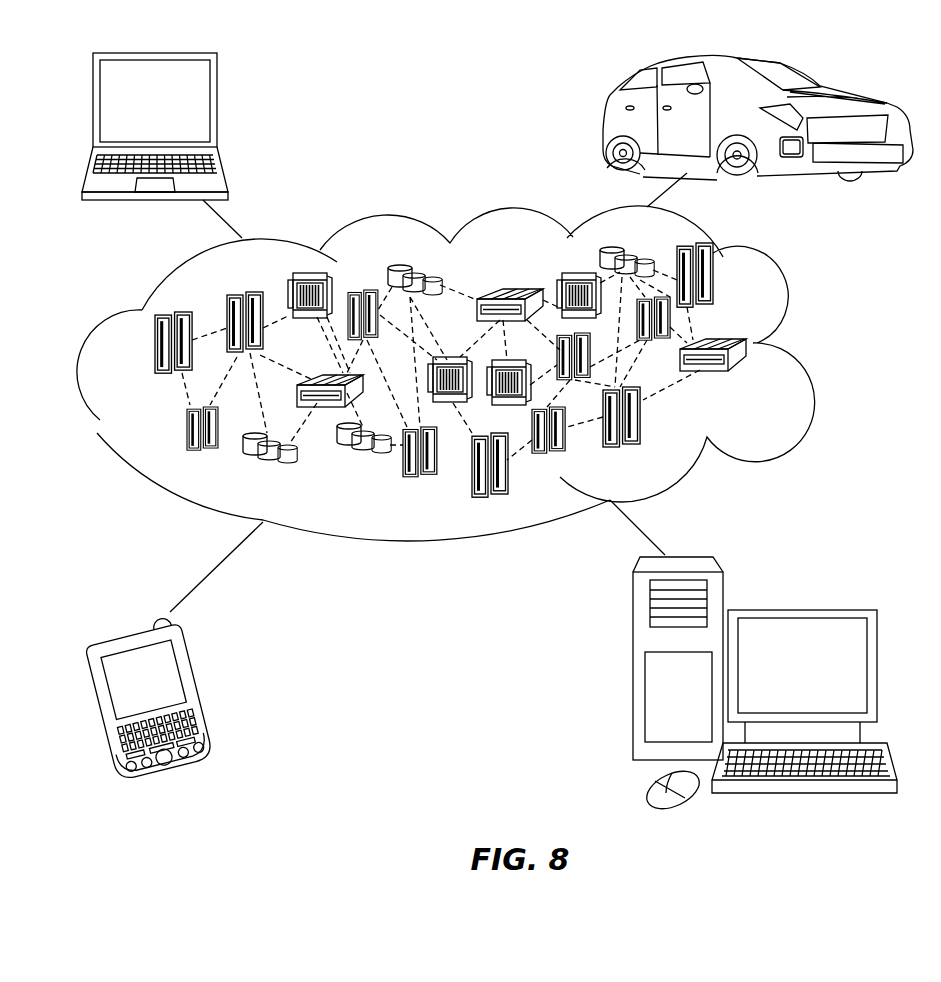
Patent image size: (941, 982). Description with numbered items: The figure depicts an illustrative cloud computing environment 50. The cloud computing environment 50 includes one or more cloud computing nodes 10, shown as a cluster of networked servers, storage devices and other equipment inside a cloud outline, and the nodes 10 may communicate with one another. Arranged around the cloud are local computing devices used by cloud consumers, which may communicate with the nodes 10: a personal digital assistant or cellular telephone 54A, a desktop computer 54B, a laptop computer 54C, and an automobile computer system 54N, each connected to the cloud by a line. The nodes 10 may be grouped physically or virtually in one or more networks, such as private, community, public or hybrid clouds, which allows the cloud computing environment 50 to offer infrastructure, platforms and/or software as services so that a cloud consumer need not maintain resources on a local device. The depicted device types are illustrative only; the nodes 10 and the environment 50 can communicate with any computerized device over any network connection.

The cloud computing node 10 is at (750, 380).
The cloud computing environment 50 is at (797, 352).
The personal digital assistant or cellular telephone 54A is at (208, 692).
The desktop computer 54B is at (802, 608).
The laptop computer 54C is at (217, 109).
The automobile computer system 54N is at (605, 121).